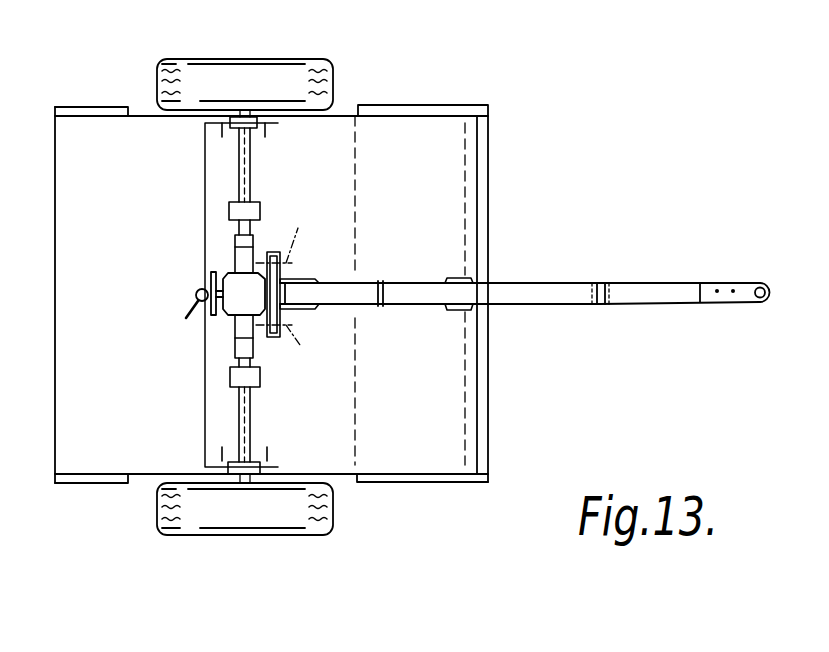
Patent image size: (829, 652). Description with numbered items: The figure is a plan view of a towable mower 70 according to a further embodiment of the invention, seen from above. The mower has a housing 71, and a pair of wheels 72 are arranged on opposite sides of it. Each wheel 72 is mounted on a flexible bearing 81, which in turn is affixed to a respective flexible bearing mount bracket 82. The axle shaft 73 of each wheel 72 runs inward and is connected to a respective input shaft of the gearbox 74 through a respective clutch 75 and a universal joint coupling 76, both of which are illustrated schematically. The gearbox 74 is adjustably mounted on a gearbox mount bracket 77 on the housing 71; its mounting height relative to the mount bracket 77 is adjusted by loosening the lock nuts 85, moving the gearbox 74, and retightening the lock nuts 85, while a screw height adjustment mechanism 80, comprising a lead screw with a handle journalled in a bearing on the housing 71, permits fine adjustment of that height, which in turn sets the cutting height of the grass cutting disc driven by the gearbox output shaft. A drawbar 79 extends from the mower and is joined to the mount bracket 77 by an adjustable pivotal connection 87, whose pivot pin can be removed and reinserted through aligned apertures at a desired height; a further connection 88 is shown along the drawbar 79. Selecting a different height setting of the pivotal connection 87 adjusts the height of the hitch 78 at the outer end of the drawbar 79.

The trailer 70 is at (526, 134).
The housing 71 is at (453, 206).
The wheels 72 is at (288, 73).
The axle shaft 73 is at (238, 160).
The gearbox 74 is at (233, 292).
The clutch 75 is at (249, 210).
The universal joint coupling 76 is at (236, 240).
The gearbox mount bracket 77 is at (275, 340).
The hitch 78 is at (760, 303).
The drawbar 79 is at (646, 301).
The screw height adjustment mechanism 80 is at (193, 306).
The flexible bearings 81 is at (252, 464).
The flexible bearing mount brackets 82 is at (216, 467).
The lock nuts 85 is at (288, 286).
The adjustable pivotal connection 87 is at (313, 279).
The bracket 88 is at (454, 280).